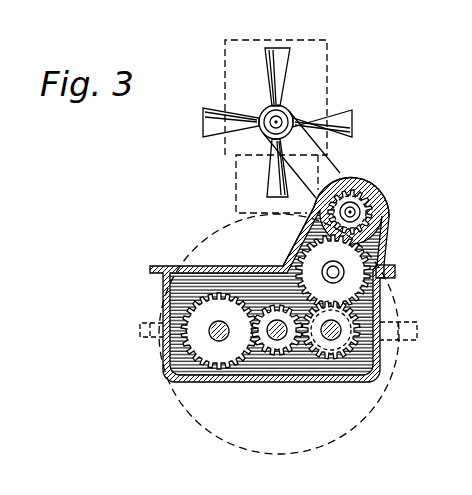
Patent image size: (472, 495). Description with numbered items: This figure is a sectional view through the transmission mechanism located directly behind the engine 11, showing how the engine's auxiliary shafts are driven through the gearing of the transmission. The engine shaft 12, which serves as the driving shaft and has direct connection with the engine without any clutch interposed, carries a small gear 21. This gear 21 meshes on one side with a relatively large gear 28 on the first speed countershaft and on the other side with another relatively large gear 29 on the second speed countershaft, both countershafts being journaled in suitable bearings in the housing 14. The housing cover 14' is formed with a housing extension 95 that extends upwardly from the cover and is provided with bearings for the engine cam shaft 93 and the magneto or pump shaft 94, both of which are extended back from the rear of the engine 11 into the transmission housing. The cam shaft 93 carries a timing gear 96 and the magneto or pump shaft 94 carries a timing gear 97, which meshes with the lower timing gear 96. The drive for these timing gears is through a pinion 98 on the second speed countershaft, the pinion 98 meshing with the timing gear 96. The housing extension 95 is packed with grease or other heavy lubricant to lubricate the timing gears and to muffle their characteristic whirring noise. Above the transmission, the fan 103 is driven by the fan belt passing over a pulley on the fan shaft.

The engine 11 is at (239, 43).
The fan 103 is at (352, 122).
The housing 14 is at (253, 280).
The timing gear 97 is at (390, 201).
The housing extension 95 is at (298, 245).
The housing cover 14' is at (404, 260).
The magneto or pump shaft 94 is at (361, 212).
The timing gear 96 is at (364, 276).
The engine cam shaft 93 is at (322, 268).
The gear 28 is at (202, 343).
The gear 21 is at (283, 307).
The engine shaft 12 is at (279, 340).
The pinion 98 is at (330, 362).
The gear 29 is at (358, 347).